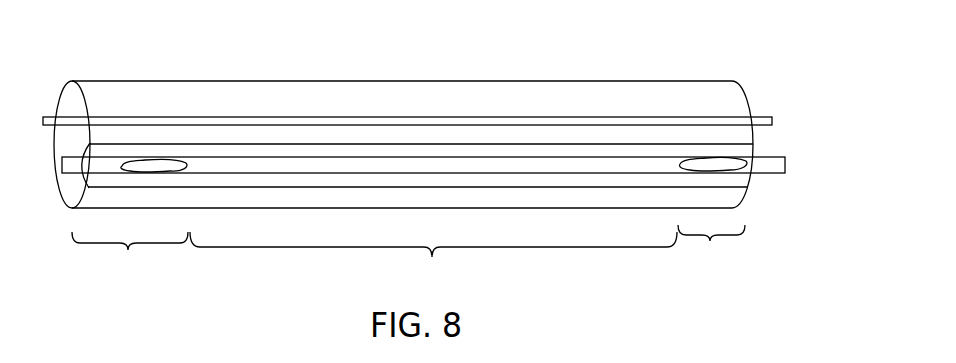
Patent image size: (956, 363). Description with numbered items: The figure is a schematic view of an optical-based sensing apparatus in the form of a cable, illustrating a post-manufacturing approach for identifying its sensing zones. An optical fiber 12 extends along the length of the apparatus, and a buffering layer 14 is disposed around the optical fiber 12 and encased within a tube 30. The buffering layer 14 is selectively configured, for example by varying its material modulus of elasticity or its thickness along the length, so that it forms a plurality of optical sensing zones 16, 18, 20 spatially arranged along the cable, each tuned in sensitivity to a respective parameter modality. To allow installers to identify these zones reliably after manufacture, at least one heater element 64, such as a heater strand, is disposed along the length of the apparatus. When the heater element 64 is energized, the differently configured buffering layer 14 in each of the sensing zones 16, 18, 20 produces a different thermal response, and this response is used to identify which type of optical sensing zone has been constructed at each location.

The optical fiber 12 is at (773, 165).
The buffering layer 14 is at (425, 151).
The optical sensing zone 16 is at (130, 254).
The optical sensing zone 18 is at (433, 258).
The optical sensing zone 20 is at (711, 247).
The tube 30 is at (290, 144).
The heater element 64 is at (605, 117).